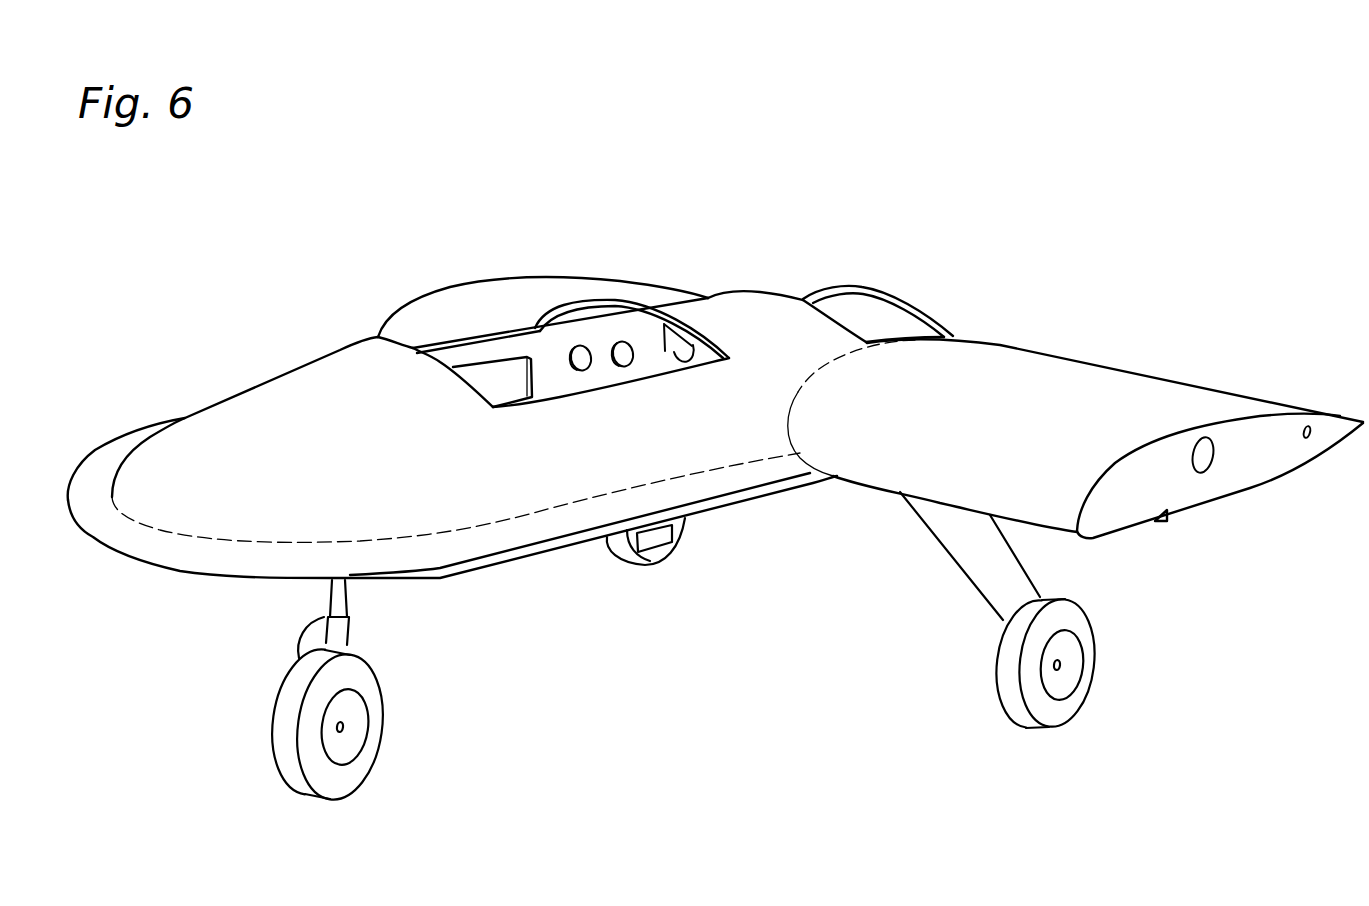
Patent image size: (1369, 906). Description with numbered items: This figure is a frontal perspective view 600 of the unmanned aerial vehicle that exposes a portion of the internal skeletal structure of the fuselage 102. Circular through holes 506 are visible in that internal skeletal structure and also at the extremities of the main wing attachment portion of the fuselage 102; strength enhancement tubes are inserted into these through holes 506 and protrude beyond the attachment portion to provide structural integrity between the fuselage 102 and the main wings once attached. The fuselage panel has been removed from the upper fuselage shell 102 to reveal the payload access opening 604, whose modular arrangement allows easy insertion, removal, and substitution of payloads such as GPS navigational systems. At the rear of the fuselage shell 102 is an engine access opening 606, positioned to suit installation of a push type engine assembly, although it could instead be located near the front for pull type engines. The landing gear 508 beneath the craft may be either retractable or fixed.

The frontal perspective view 600 is at (517, 207).
The fuselage 102 is at (270, 398).
The circular through holes 506 is at (573, 350).
The payload access opening 604 is at (650, 348).
The engine access opening 606 is at (885, 320).
The landing gear 508 is at (363, 772).